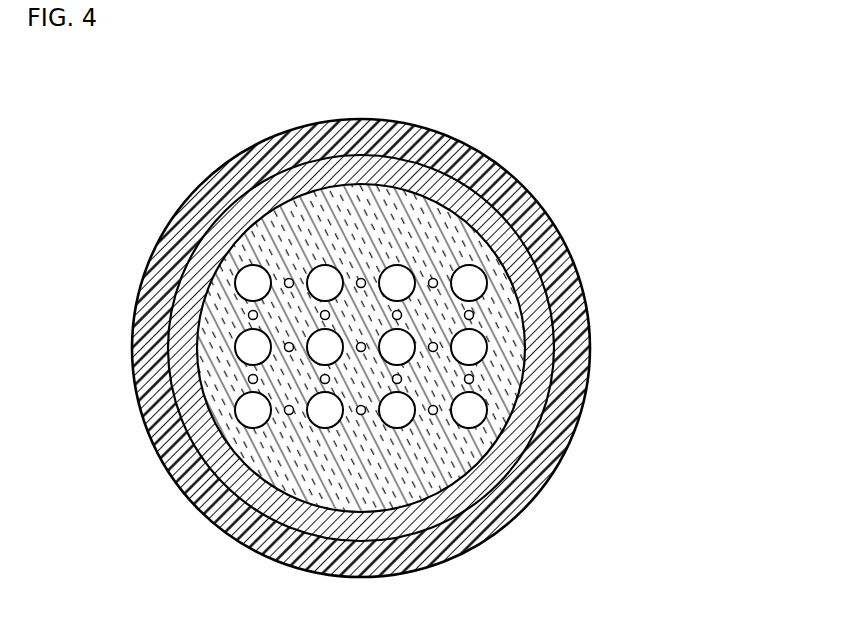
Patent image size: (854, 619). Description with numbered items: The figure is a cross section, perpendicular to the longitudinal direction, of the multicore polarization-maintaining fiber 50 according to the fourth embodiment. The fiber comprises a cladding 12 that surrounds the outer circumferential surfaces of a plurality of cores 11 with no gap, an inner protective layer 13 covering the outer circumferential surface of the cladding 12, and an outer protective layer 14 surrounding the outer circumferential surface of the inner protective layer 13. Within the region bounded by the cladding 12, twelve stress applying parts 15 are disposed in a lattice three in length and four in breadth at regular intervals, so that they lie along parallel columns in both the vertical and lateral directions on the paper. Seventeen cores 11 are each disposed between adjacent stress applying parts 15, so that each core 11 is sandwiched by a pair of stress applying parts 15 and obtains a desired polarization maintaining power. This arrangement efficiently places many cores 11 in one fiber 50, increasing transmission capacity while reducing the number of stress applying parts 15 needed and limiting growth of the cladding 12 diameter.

The core 11 is at (436, 280).
The cladding 12 is at (387, 218).
The inner protective layer 13 is at (545, 348).
The outer protective layer 14 is at (578, 353).
The stress applying part 15 is at (400, 272).
The multicore polarization-maintaining fiber 50 is at (420, 324).